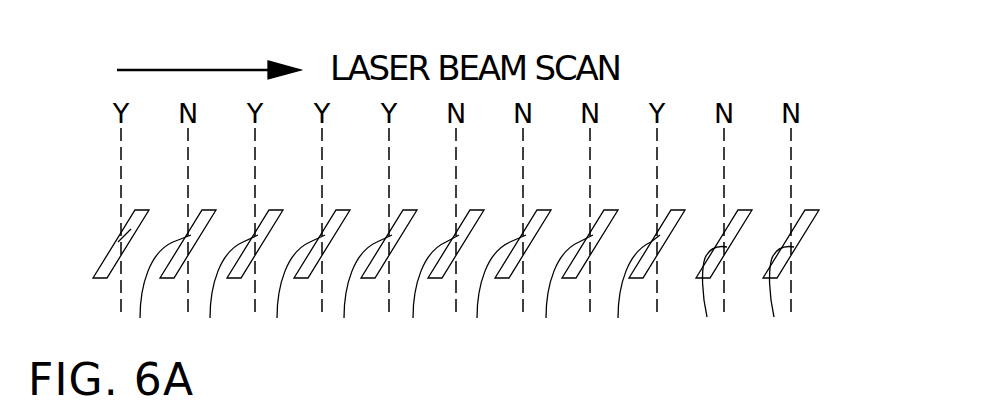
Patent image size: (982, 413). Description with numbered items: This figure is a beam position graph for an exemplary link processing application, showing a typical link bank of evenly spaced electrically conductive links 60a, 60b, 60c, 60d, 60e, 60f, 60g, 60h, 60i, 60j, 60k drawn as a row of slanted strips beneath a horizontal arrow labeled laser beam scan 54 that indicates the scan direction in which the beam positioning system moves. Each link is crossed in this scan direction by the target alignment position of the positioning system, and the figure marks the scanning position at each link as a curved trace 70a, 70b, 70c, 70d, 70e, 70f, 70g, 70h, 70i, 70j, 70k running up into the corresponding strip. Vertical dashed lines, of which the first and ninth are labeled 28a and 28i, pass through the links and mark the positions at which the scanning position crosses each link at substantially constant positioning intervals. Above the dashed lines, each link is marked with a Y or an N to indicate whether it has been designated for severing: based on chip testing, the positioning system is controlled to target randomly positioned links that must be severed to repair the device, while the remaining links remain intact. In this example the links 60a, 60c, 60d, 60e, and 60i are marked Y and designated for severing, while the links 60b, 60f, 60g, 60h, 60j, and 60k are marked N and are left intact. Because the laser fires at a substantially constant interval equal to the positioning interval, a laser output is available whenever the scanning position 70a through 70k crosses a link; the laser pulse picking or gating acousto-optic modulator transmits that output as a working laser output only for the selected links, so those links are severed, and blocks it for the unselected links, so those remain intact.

The laser beam scan direction 54 is at (209, 70).
The scan line 28a is at (121, 300).
The scan line 28i is at (659, 298).
The electrically conductive link 60a is at (147, 210).
The electrically conductive link 60b is at (214, 210).
The electrically conductive link 60c is at (281, 210).
The electrically conductive link 60d is at (348, 210).
The electrically conductive link 60e is at (415, 210).
The electrically conductive link 60f is at (482, 210).
The electrically conductive link 60g is at (549, 210).
The electrically conductive link 60h is at (616, 210).
The electrically conductive link 60i is at (683, 210).
The electrically conductive link 60j is at (750, 210).
The electrically conductive link 60k is at (817, 210).
The target alignment position 70a is at (118, 242).
The target alignment position 70b is at (154, 294).
The target alignment position 70c is at (223, 294).
The target alignment position 70d is at (289, 294).
The target alignment position 70e is at (356, 294).
The target alignment position 70f is at (427, 294).
The target alignment position 70g is at (490, 294).
The target alignment position 70h is at (558, 294).
The target alignment position 70i is at (631, 294).
The target alignment position 70j is at (710, 299).
The target alignment position 70k is at (777, 299).